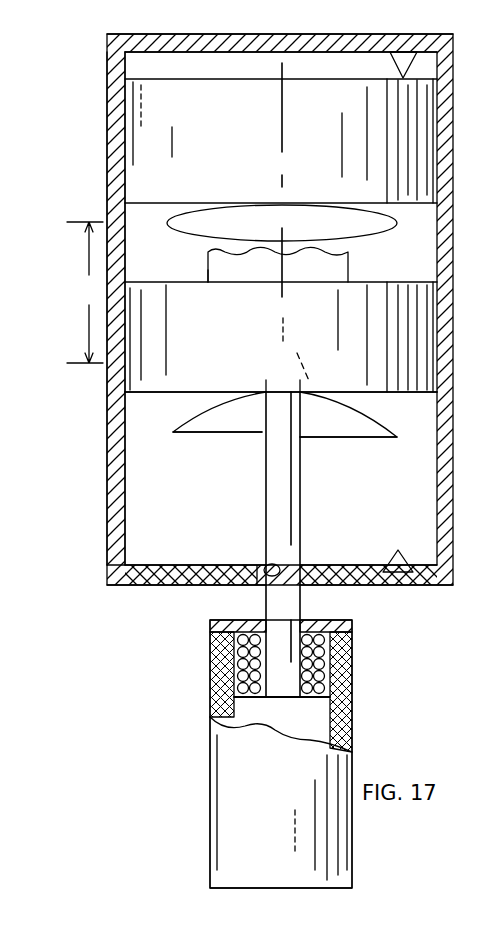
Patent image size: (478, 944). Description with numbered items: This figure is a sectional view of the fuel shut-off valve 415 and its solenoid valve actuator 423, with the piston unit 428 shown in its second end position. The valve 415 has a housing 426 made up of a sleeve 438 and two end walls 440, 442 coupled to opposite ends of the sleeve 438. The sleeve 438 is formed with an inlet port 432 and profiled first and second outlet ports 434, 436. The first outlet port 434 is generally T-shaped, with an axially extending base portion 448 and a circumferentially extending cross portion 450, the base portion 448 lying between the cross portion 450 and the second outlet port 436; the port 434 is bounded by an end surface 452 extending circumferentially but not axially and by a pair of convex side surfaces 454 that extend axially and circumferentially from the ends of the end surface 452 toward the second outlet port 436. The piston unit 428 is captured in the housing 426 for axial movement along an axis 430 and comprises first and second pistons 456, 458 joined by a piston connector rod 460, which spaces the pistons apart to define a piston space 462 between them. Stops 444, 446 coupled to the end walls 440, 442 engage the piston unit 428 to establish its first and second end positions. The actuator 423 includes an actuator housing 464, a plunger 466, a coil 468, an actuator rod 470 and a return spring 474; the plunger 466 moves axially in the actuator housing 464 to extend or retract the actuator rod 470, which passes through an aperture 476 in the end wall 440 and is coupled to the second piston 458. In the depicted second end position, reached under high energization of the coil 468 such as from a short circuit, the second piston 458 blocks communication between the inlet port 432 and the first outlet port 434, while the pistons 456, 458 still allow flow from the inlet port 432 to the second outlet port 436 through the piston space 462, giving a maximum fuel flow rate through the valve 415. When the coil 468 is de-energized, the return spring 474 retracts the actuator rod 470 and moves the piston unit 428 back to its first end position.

The fuel shut-off valve 415 is at (70, 645).
The valve actuator 423 is at (142, 779).
The housing 426 is at (13, 170).
The piston unit 428 is at (377, 445).
The axis 430 is at (283, 112).
The inlet port 432 is at (89, 262).
The first outlet port 434 is at (215, 448).
The second outlet port 436 is at (197, 205).
The sleeve 438 is at (112, 508).
The end wall 440 is at (157, 574).
The end wall 442 is at (168, 50).
The stop 444 is at (380, 562).
The stop 446 is at (396, 65).
The base portion 448 is at (283, 345).
The cross portion 450 is at (318, 440).
The end surface 452 is at (255, 431).
The convex side surfaces 454 is at (267, 383).
The first piston 456 is at (133, 128).
The second piston 458 is at (150, 386).
The piston connector rod 460 is at (338, 272).
The piston space 462 is at (146, 282).
The actuator housing 464 is at (226, 816).
The plunger 466 is at (278, 719).
The coil 468 is at (220, 670).
The actuator rod 470 is at (301, 532).
The return spring 474 is at (318, 663).
The aperture 476 is at (263, 565).